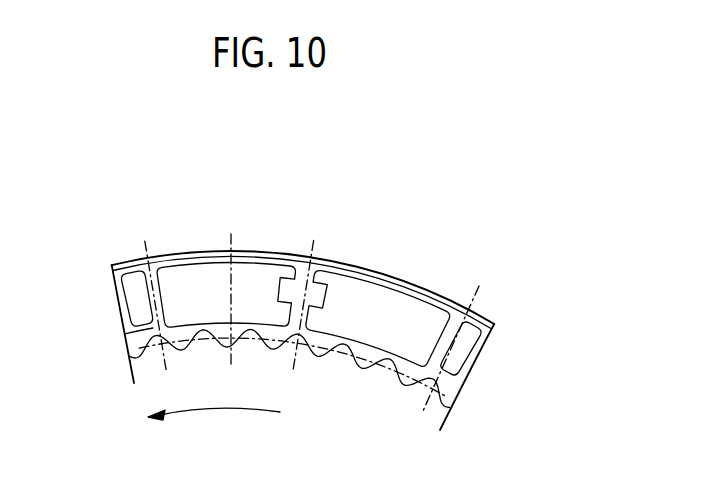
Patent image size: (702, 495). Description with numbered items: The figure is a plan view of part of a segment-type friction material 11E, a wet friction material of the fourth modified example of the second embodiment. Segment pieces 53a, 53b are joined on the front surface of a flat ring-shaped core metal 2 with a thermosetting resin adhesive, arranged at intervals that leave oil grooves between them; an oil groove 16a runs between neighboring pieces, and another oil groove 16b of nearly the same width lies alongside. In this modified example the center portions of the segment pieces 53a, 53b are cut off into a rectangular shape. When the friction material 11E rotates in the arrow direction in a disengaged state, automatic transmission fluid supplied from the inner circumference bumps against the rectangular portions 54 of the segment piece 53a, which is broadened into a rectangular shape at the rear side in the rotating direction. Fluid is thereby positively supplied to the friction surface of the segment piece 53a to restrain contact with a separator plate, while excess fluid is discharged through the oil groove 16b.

The core metal 2 is at (419, 290).
The segment-type friction material 11E is at (342, 241).
The oil groove 16a is at (301, 358).
The oil groove 16b is at (148, 262).
The segment piece 53a is at (379, 292).
The segment piece 53b is at (195, 272).
The rectangular portion 54 is at (328, 286).